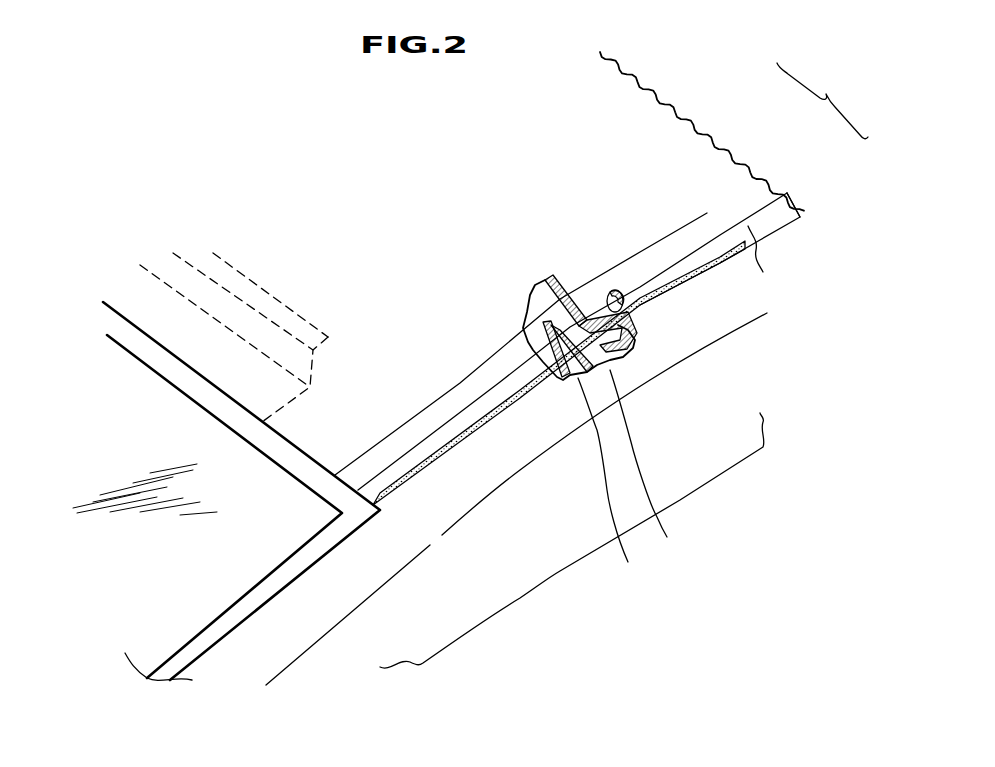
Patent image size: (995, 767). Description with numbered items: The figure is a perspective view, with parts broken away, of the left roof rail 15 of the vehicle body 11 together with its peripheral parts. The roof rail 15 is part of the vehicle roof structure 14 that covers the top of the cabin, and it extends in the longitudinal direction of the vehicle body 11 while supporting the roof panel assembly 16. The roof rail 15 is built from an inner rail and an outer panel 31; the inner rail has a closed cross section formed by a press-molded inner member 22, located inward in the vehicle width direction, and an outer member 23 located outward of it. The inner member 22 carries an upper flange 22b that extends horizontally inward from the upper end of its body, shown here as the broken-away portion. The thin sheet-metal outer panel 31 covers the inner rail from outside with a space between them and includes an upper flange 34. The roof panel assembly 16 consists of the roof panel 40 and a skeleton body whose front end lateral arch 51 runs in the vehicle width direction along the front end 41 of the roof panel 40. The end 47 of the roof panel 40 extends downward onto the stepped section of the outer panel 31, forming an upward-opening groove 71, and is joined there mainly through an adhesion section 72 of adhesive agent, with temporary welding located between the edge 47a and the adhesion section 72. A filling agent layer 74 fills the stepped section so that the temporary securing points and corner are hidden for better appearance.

The vehicle body 11 is at (553, 627).
The vehicle roof structure 14 is at (822, 101).
The roof rail 15 is at (733, 317).
The roof panel assembly 16 is at (650, 117).
The inner member 22 is at (619, 484).
The upper flange 22b is at (524, 335).
The outer member 23 is at (654, 466).
The outer panel 31 is at (675, 340).
The upper flange 34 is at (533, 284).
The roof panel 40 is at (609, 84).
The front end 41 is at (160, 333).
The right end 47 is at (675, 230).
The edge 47a is at (790, 218).
The front end lateral arch 51 is at (241, 272).
The groove 71 is at (458, 395).
The adhesion section 72 is at (607, 294).
The filling agent layer 74 is at (728, 232).